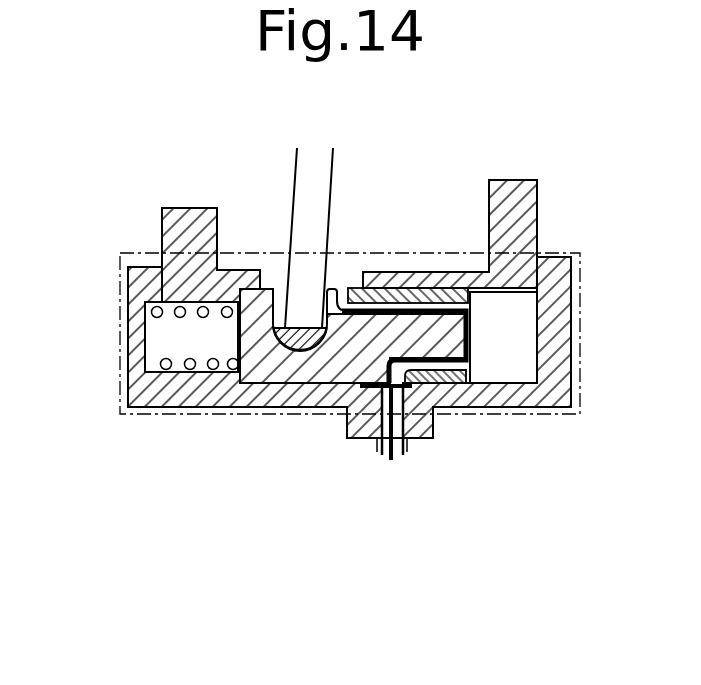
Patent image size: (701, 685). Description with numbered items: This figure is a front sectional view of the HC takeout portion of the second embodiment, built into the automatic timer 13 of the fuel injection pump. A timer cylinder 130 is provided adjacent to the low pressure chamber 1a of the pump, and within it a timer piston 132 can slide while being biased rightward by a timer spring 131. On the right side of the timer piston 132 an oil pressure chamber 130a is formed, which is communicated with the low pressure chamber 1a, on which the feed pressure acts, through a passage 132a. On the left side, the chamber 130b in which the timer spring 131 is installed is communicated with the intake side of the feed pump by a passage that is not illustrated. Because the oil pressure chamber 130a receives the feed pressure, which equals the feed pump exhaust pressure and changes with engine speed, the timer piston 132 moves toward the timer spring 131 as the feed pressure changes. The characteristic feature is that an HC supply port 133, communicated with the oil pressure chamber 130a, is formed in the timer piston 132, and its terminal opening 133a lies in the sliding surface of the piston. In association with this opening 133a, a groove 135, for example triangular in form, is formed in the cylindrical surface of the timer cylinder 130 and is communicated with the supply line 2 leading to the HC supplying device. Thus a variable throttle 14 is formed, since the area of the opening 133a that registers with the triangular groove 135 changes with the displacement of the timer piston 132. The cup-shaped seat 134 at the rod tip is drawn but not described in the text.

The automatic timer 13 is at (117, 251).
The low pressure chamber 1a is at (472, 221).
The chamber 130b is at (167, 338).
The timer spring 131 is at (155, 362).
The timer cylinder 130 is at (268, 380).
The seat 134 is at (313, 332).
The passage 132a is at (408, 294).
The timer piston 132 is at (462, 342).
The oil pressure chamber 130a is at (522, 312).
The opening 133a is at (410, 388).
The HC supply port 133 is at (472, 400).
The groove 135 is at (419, 456).
The supply line 2 is at (390, 455).
The variable throttle 14 is at (440, 418).